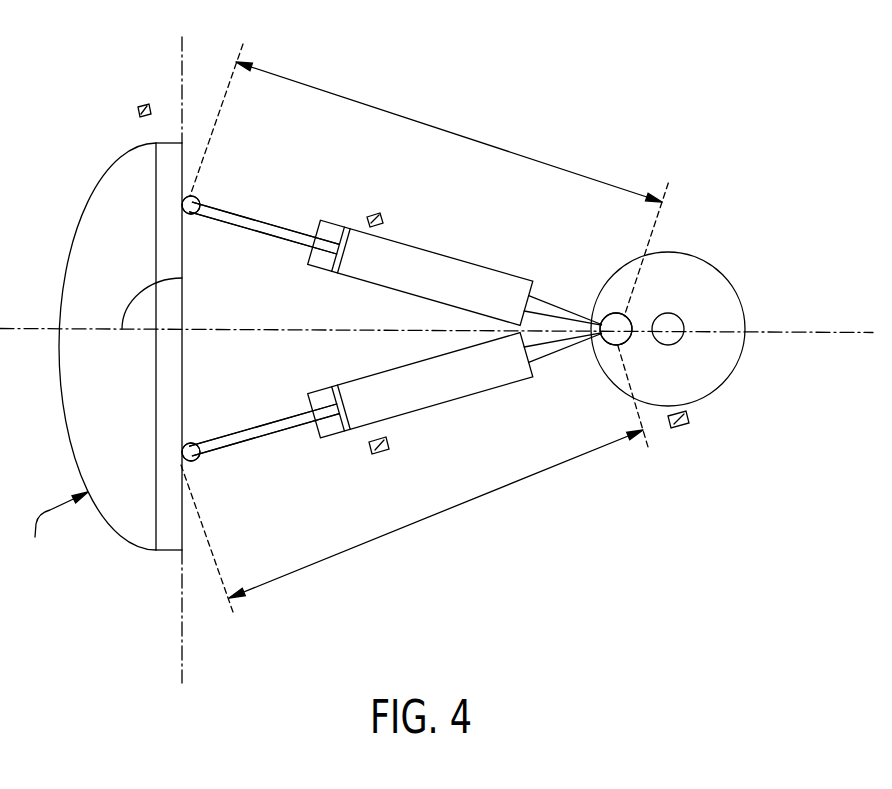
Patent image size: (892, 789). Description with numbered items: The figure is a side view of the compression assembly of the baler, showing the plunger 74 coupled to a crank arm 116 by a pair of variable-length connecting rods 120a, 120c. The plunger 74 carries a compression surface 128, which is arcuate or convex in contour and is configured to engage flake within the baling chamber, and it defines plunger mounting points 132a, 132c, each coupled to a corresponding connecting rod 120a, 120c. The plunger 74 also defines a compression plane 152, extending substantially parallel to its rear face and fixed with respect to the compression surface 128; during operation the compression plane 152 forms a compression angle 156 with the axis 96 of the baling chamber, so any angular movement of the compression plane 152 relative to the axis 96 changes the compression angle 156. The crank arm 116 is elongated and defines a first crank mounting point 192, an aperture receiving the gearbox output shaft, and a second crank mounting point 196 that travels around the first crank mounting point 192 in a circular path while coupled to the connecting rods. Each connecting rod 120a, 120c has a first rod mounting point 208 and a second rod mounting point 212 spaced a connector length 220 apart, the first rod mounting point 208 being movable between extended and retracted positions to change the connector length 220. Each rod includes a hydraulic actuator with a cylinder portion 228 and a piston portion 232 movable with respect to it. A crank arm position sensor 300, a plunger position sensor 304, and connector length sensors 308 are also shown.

The plunger 74 is at (109, 191).
The axis of the baling chamber 96 is at (802, 327).
The crank arm 116 is at (725, 278).
The variable-length connecting rod 120a is at (423, 252).
The variable-length connecting rod 120c is at (425, 412).
The compression surface 128 is at (56, 530).
The plunger mounting point 132a is at (194, 187).
The plunger mounting point 132c is at (191, 464).
The compression plane 152 is at (185, 42).
The compression angle 156 is at (133, 297).
The first crank mounting point 192 is at (671, 346).
The second crank mounting point 196 is at (627, 319).
The first rod mounting point 208 is at (609, 346).
The second rod mounting point 212 is at (200, 198).
The connector length 220 is at (453, 130).
The cylinder portion 228 is at (497, 272).
The piston portion 232 is at (269, 223).
The crank arm position sensor 300 is at (680, 429).
The plunger position sensor 304 is at (142, 105).
The connector length sensor 308 is at (371, 214).